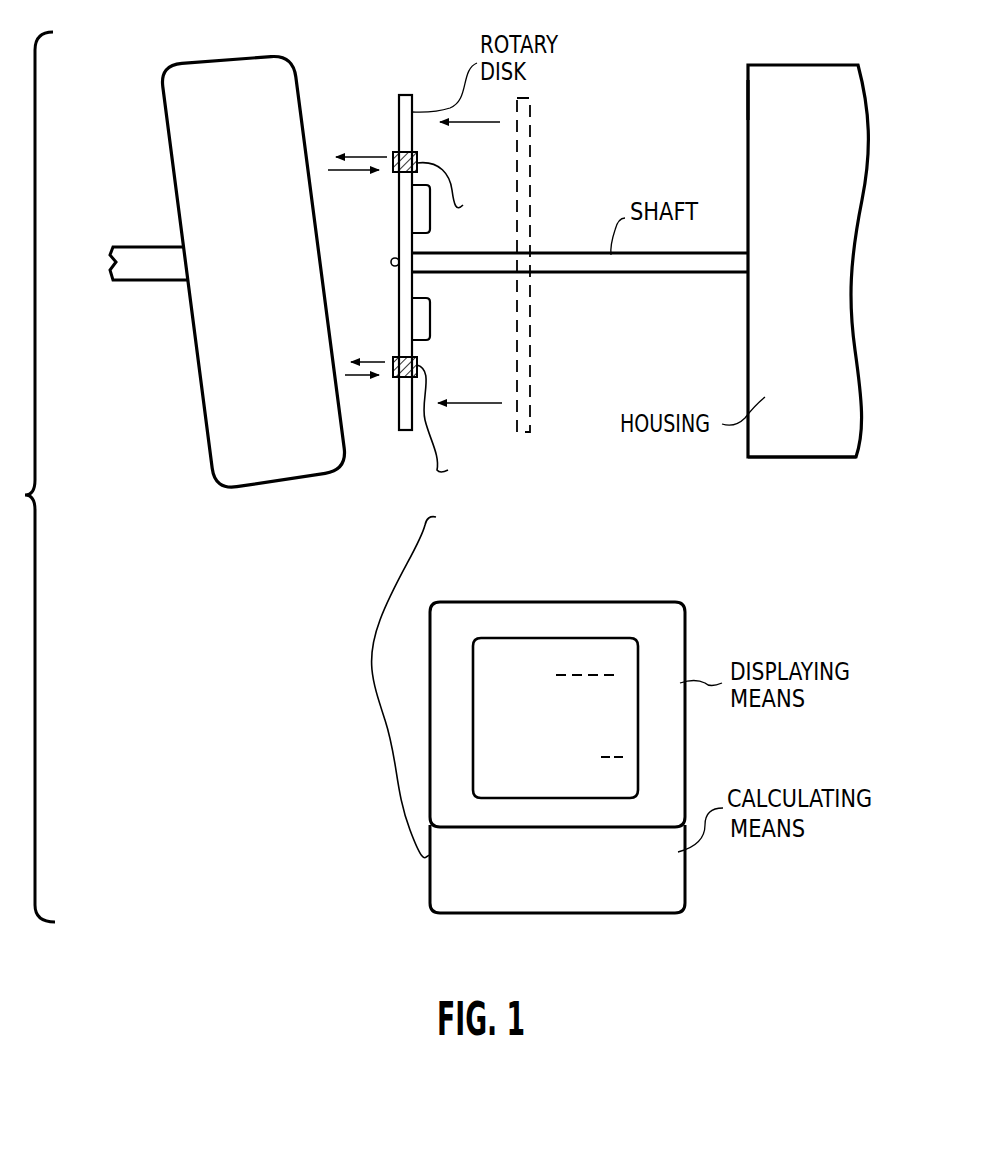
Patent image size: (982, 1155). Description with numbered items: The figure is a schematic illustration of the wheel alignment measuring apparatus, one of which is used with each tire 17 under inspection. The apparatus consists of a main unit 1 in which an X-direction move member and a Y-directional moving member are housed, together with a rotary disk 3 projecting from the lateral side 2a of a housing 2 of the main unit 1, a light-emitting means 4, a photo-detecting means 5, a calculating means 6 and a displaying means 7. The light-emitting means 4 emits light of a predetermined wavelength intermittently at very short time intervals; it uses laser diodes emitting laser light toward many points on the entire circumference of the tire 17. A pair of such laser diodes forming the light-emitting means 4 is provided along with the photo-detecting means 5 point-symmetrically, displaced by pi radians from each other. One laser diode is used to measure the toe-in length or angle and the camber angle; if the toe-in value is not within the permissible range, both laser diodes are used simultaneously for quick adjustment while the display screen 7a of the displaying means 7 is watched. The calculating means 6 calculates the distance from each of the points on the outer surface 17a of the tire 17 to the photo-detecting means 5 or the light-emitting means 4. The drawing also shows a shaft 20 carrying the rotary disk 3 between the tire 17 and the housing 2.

The main unit 1 is at (826, 474).
The housing 2 is at (803, 65).
The lateral side 2a is at (748, 100).
The rotary disk 3 is at (402, 95).
The light-emitting means 4 is at (395, 153).
The photo-detecting means 5 is at (396, 172).
The calculating means 6 is at (475, 900).
The displaying means 7 is at (680, 722).
The display screen 7a is at (640, 652).
The tire 17 is at (283, 480).
The outer surface 17a is at (303, 115).
The shaft 20 is at (643, 268).